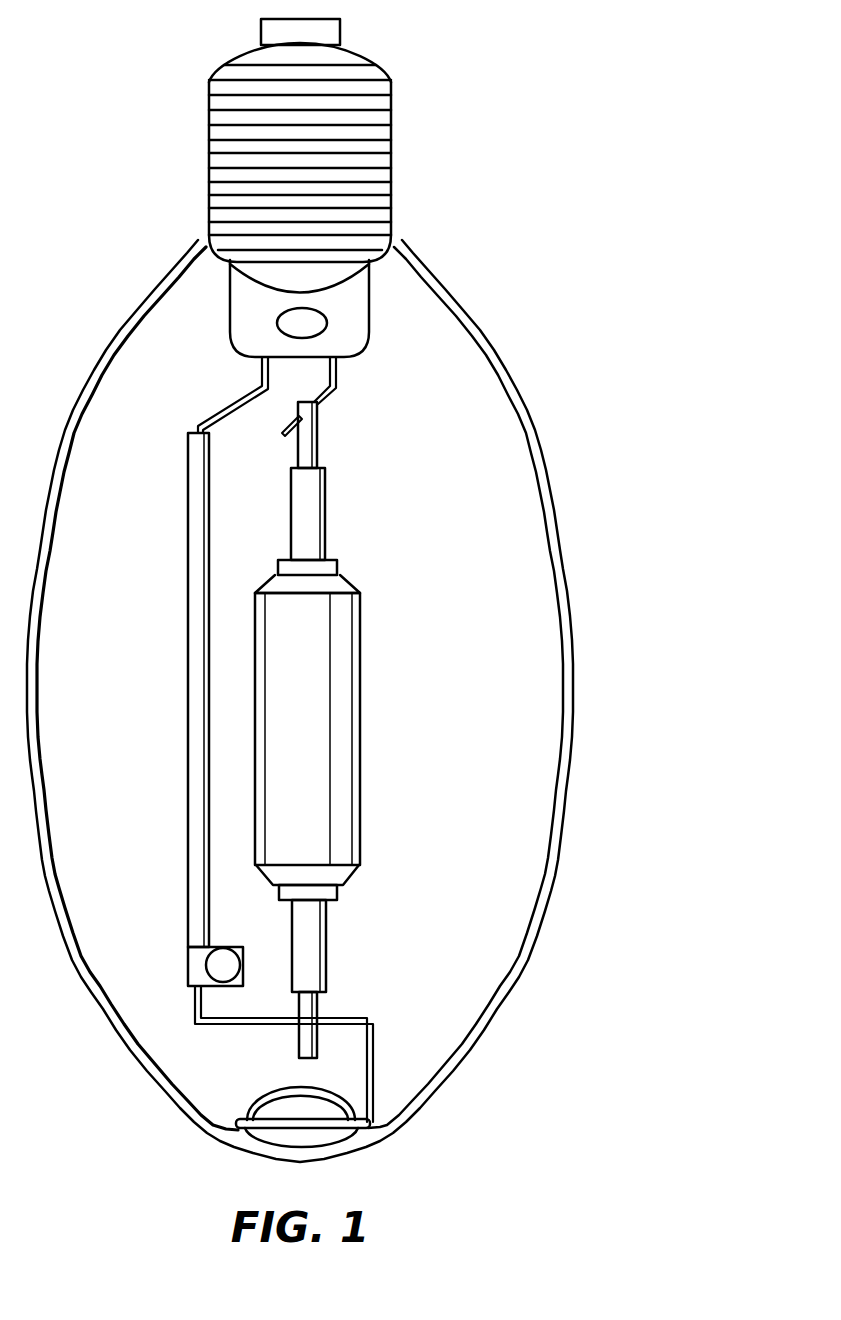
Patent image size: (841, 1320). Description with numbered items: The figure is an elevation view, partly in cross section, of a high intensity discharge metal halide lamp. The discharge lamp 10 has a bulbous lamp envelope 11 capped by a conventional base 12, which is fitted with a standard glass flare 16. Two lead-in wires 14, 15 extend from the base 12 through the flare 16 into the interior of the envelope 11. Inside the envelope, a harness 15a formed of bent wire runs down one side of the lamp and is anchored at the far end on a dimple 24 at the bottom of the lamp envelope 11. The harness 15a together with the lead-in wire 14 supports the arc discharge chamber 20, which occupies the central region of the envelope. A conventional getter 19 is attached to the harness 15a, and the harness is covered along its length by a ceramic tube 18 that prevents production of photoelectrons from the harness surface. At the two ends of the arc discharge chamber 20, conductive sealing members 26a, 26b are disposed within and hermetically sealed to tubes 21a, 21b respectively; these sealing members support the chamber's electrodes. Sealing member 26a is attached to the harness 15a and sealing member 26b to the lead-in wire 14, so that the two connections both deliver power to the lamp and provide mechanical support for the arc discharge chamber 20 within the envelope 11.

The discharge lamp 10 is at (340, 590).
The lamp envelope 11 is at (563, 543).
The base 12 is at (380, 70).
The lead-in wire 14 is at (337, 385).
The lead-in wire 15 is at (228, 407).
The harness 15a is at (193, 427).
The glass flare 16 is at (365, 345).
The ceramic tube 18 is at (188, 598).
The getter 19 is at (232, 947).
The arc discharge chamber 20 is at (360, 587).
The tube 21a is at (327, 517).
The tube 21b is at (327, 948).
The dimple 24 is at (257, 1100).
The conductive sealing member 26a is at (317, 452).
The conductive sealing member 26b is at (318, 1008).